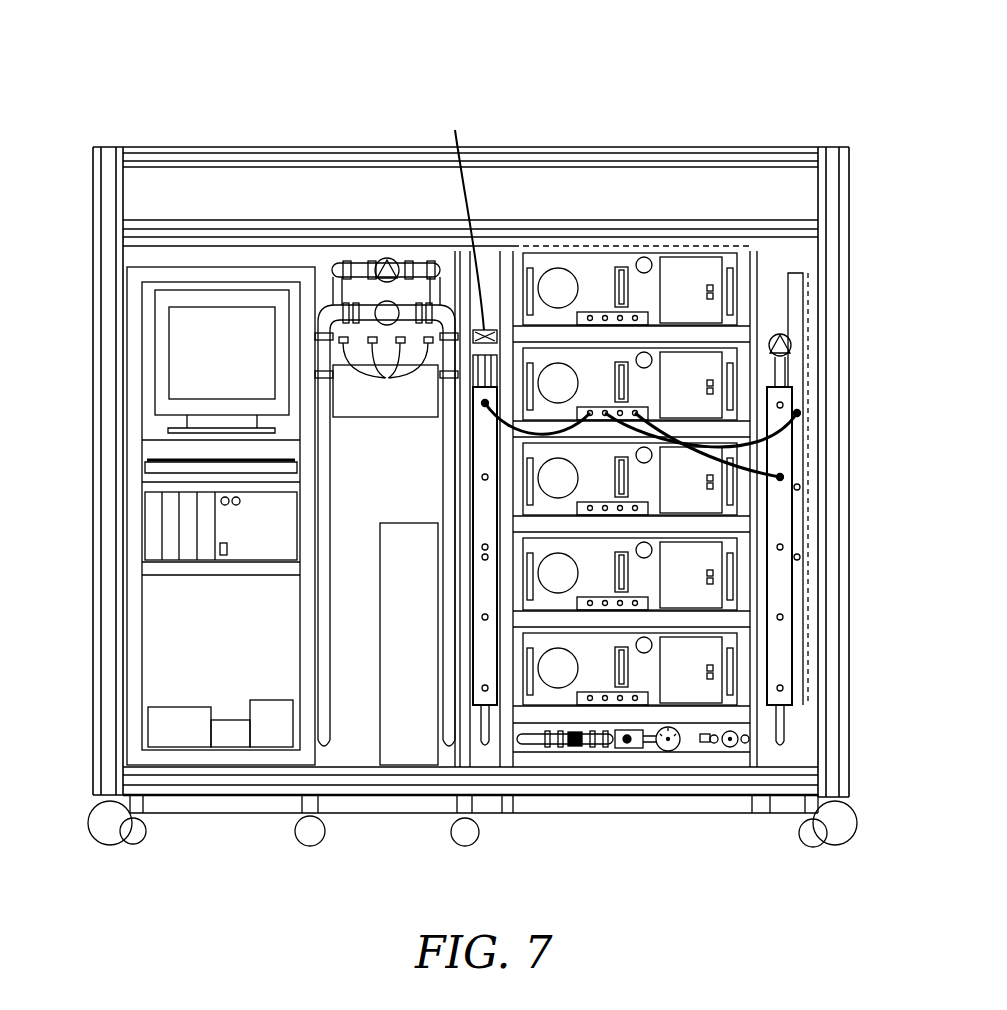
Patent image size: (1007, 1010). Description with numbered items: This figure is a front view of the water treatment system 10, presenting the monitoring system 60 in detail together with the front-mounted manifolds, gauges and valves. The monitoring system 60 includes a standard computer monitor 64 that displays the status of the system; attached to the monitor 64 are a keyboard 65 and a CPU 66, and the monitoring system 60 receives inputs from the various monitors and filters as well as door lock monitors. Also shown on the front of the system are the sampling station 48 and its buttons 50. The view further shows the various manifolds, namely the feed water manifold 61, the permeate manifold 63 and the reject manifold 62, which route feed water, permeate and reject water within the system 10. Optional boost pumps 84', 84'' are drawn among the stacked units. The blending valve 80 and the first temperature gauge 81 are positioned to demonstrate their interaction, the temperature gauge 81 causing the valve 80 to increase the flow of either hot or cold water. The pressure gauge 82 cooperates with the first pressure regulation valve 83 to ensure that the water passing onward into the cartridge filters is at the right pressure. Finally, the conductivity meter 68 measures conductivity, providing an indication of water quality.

The system 10 is at (211, 66).
The reject manifold 62 is at (215, 272).
The computer monitor 64 is at (243, 361).
The keyboard 65 is at (183, 467).
The CPU 66 is at (232, 527).
The monitoring system 60 is at (153, 728).
The sampling station 48 is at (420, 410).
The buttons 50 is at (386, 373).
The conductivity meter 68 is at (462, 430).
The boost pump 84'' is at (721, 251).
The boost pump 84' is at (717, 357).
The feed water manifold 61 is at (780, 510).
The permeate manifold 63 is at (487, 557).
The pressure gauge 82 is at (580, 745).
The first pressure regulation valve 83 is at (625, 748).
The first temperature gauge 81 is at (668, 751).
The blending valve 80 is at (727, 748).